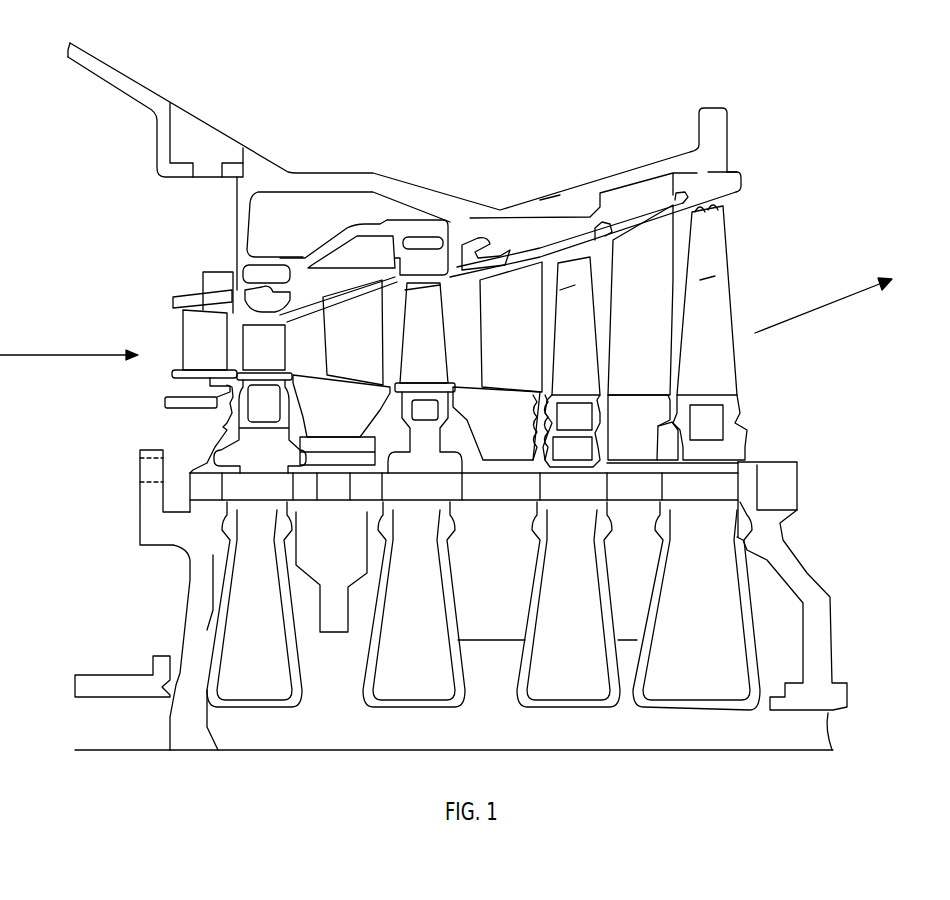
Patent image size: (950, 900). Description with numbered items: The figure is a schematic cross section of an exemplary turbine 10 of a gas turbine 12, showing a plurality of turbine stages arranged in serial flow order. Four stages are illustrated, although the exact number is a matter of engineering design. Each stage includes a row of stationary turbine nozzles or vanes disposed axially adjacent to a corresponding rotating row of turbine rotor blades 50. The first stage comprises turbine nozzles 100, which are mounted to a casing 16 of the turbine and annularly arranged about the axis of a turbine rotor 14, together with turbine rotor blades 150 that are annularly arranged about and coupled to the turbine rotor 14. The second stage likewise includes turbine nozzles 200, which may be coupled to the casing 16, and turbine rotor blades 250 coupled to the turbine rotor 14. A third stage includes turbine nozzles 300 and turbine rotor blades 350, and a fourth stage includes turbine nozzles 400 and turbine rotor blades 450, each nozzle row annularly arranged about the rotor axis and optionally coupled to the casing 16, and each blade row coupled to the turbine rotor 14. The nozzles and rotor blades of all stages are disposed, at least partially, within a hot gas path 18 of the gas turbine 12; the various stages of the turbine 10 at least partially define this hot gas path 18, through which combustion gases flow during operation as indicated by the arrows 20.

The turbine 10 is at (550, 180).
The gas turbine 12 is at (284, 78).
The turbine rotor 14 is at (320, 727).
The casing 16 is at (355, 228).
The hot gas path 18 is at (306, 343).
The arrows 20 is at (22, 357).
The turbine rotor blades 50 is at (276, 359).
The turbine nozzles 100 is at (224, 354).
The turbine rotor blades 150 is at (247, 350).
The turbine nozzles 200 is at (367, 354).
The turbine rotor blades 250 is at (418, 305).
The turbine nozzles 300 is at (526, 341).
The turbine rotor blades 350 is at (572, 282).
The turbine nozzles 400 is at (654, 307).
The turbine rotor blades 450 is at (707, 275).